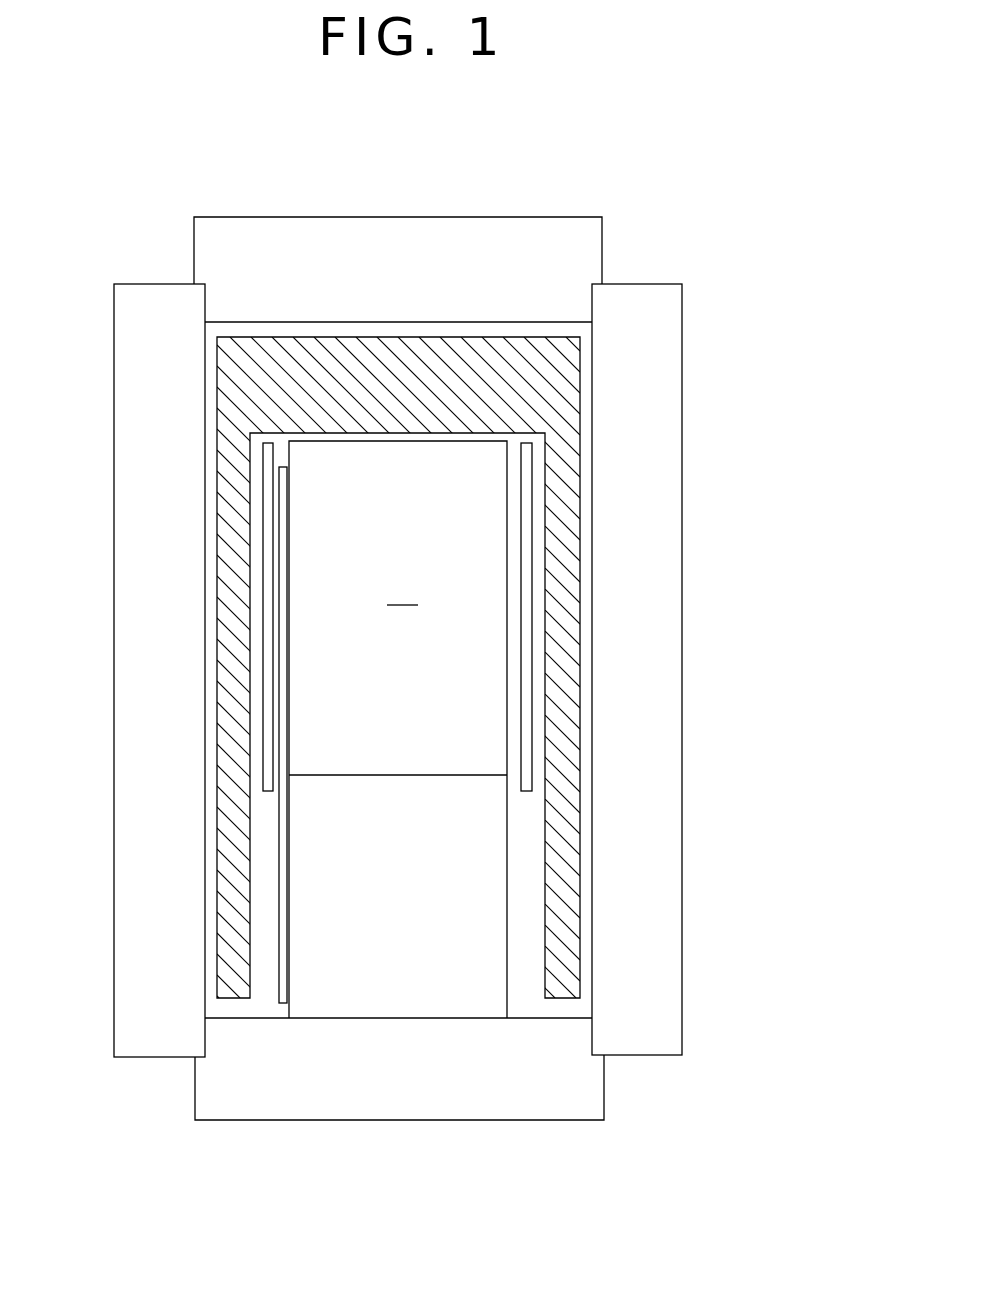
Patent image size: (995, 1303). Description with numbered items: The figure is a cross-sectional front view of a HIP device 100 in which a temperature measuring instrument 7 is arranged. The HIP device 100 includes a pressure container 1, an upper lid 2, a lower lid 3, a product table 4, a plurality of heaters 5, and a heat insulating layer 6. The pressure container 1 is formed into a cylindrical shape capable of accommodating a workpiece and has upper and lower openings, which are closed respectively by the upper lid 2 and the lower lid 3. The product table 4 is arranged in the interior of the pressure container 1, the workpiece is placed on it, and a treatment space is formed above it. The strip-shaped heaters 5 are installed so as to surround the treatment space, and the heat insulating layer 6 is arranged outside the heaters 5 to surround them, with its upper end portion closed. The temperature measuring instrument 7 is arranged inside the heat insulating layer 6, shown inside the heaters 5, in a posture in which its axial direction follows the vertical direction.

The HIP device 100 is at (674, 143).
The pressure container 1 is at (683, 284).
The upper lid 2 is at (488, 217).
The lower lid 3 is at (573, 1121).
The product table 4 is at (507, 930).
The heaters 5 is at (268, 553).
The heat insulating layer 6 is at (581, 448).
The temperature measuring instrument 7 is at (280, 645).